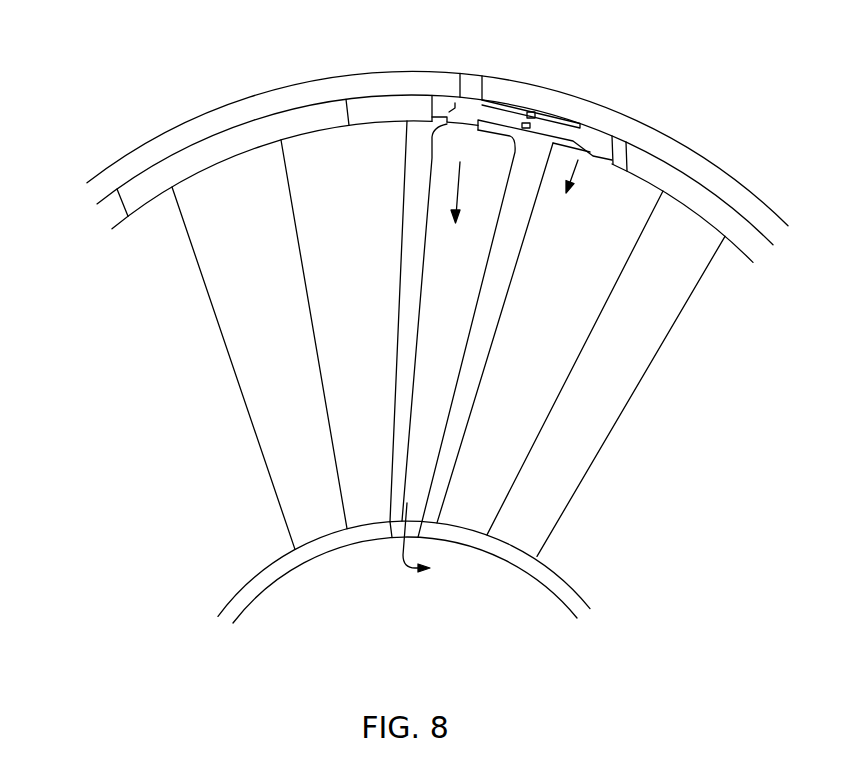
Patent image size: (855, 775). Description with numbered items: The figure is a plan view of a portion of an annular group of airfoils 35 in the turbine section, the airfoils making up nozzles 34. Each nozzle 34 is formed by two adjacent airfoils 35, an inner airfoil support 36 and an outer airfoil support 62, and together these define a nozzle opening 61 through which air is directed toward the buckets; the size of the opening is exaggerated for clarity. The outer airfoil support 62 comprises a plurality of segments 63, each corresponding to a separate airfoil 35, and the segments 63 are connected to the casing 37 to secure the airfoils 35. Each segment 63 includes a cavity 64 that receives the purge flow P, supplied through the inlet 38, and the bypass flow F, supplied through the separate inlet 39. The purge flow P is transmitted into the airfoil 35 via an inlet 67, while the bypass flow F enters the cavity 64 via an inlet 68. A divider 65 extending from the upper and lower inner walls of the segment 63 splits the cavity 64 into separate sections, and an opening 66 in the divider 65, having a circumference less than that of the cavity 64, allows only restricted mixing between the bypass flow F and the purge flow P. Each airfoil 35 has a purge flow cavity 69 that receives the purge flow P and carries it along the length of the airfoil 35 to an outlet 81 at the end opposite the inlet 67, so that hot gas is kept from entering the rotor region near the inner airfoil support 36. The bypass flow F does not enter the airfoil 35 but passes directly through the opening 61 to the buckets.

The nozzle 34 is at (545, 379).
The airfoil 35 is at (453, 422).
The inner airfoil support 36 is at (552, 573).
The casing 37 is at (710, 172).
The inlet 38 is at (473, 80).
The inlet 39 is at (612, 120).
The nozzle opening 61 is at (563, 282).
The outer airfoil support 62 is at (343, 140).
The segment 63 is at (325, 120).
The cavity 64 is at (448, 108).
The divider 65 is at (543, 110).
The opening 66 is at (552, 122).
The inlet 67 is at (437, 143).
The inlet 68 is at (590, 165).
The purge flow cavity 69 is at (433, 343).
The outlet 81 is at (412, 540).
The purge flow P is at (431, 373).
The bypass flow F is at (568, 189).